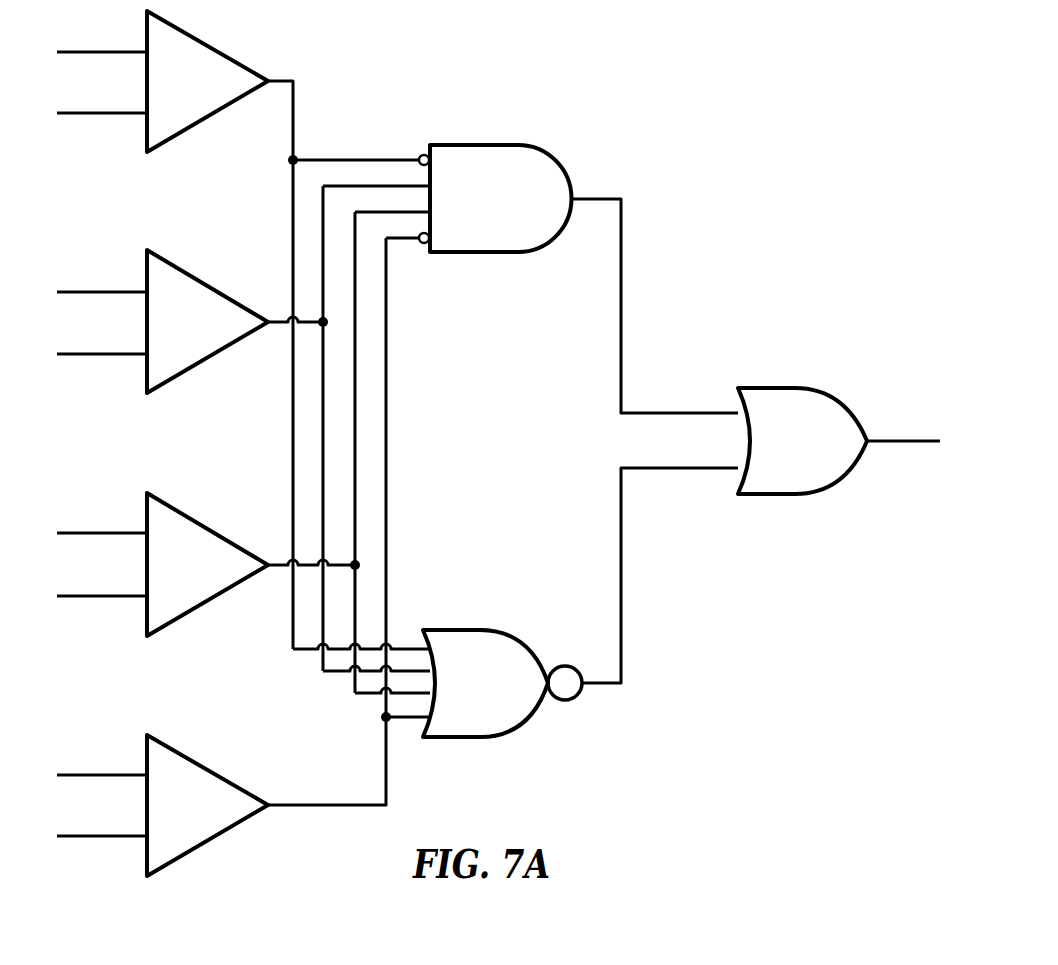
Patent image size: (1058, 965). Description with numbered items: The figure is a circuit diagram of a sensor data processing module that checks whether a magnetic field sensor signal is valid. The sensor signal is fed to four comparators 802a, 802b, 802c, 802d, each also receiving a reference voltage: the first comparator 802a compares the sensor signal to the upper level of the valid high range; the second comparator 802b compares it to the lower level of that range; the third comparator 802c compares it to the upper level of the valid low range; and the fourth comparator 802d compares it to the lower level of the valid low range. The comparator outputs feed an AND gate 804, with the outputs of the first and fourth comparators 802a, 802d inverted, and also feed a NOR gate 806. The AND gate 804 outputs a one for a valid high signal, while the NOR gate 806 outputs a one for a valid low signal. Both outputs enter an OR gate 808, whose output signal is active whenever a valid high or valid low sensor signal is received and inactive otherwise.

The first comparator 802a is at (224, 95).
The second comparator 802b is at (224, 336).
The third comparator 802c is at (224, 579).
The fourth comparator 802d is at (224, 819).
The AND gate 804 is at (513, 212).
The NOR gate 806 is at (510, 696).
The OR gate 808 is at (824, 455).